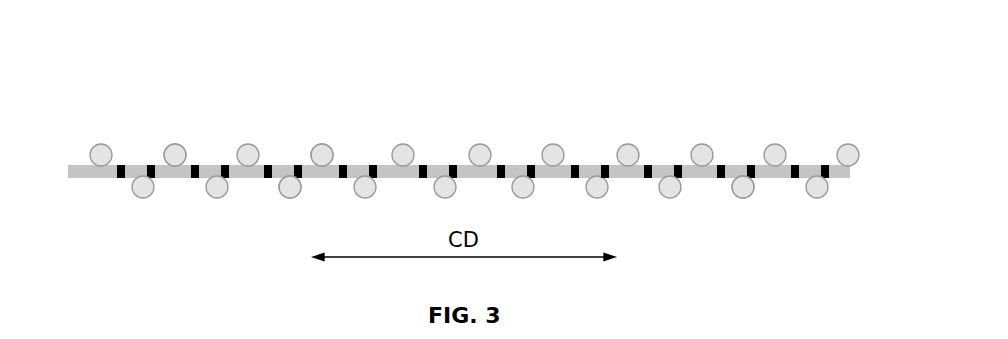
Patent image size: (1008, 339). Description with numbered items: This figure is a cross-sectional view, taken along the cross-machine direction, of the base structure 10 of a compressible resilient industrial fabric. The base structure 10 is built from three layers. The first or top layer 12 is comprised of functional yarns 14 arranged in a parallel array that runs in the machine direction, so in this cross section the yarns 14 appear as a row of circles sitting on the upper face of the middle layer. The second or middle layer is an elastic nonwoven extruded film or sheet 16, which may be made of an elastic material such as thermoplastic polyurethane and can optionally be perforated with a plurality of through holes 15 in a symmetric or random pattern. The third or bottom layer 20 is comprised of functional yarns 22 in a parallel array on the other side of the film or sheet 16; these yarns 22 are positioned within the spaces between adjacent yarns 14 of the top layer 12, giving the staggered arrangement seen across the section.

The base structure 10 is at (462, 111).
The first or top layer 12 is at (153, 140).
The functional yarns 14 is at (313, 142).
The through holes 15 is at (607, 178).
The elastic nonwoven extruded film or sheet 16 is at (719, 161).
The third or bottom layer 20 is at (272, 200).
The functional yarns 22 is at (756, 193).